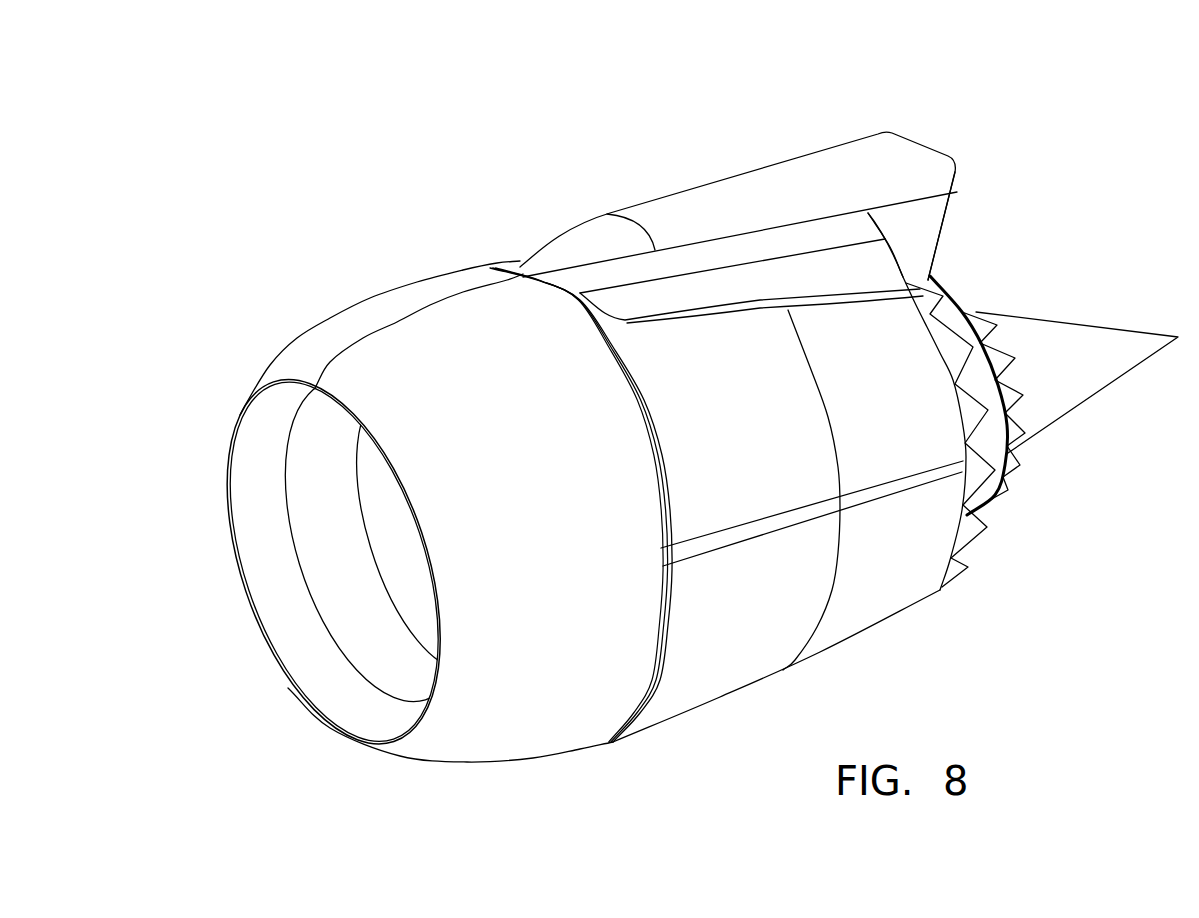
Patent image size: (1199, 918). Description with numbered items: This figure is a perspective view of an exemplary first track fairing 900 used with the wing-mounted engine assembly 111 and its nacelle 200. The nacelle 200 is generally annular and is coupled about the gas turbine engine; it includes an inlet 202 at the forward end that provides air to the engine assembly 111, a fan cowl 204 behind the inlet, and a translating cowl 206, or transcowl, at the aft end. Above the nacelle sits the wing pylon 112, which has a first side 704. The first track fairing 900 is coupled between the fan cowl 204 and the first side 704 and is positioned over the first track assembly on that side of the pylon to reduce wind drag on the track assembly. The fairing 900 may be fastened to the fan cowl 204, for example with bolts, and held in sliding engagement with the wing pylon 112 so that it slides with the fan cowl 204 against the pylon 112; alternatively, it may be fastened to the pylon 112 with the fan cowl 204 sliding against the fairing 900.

The wing-mounted engine assembly 111 is at (416, 152).
The wing pylon 112 is at (797, 198).
The nacelle 200 is at (318, 740).
The inlet 202 is at (423, 335).
The fan cowl 204 is at (683, 677).
The translating cowl 206 is at (855, 610).
The first side 704 is at (928, 208).
The first track fairing 900 is at (862, 267).